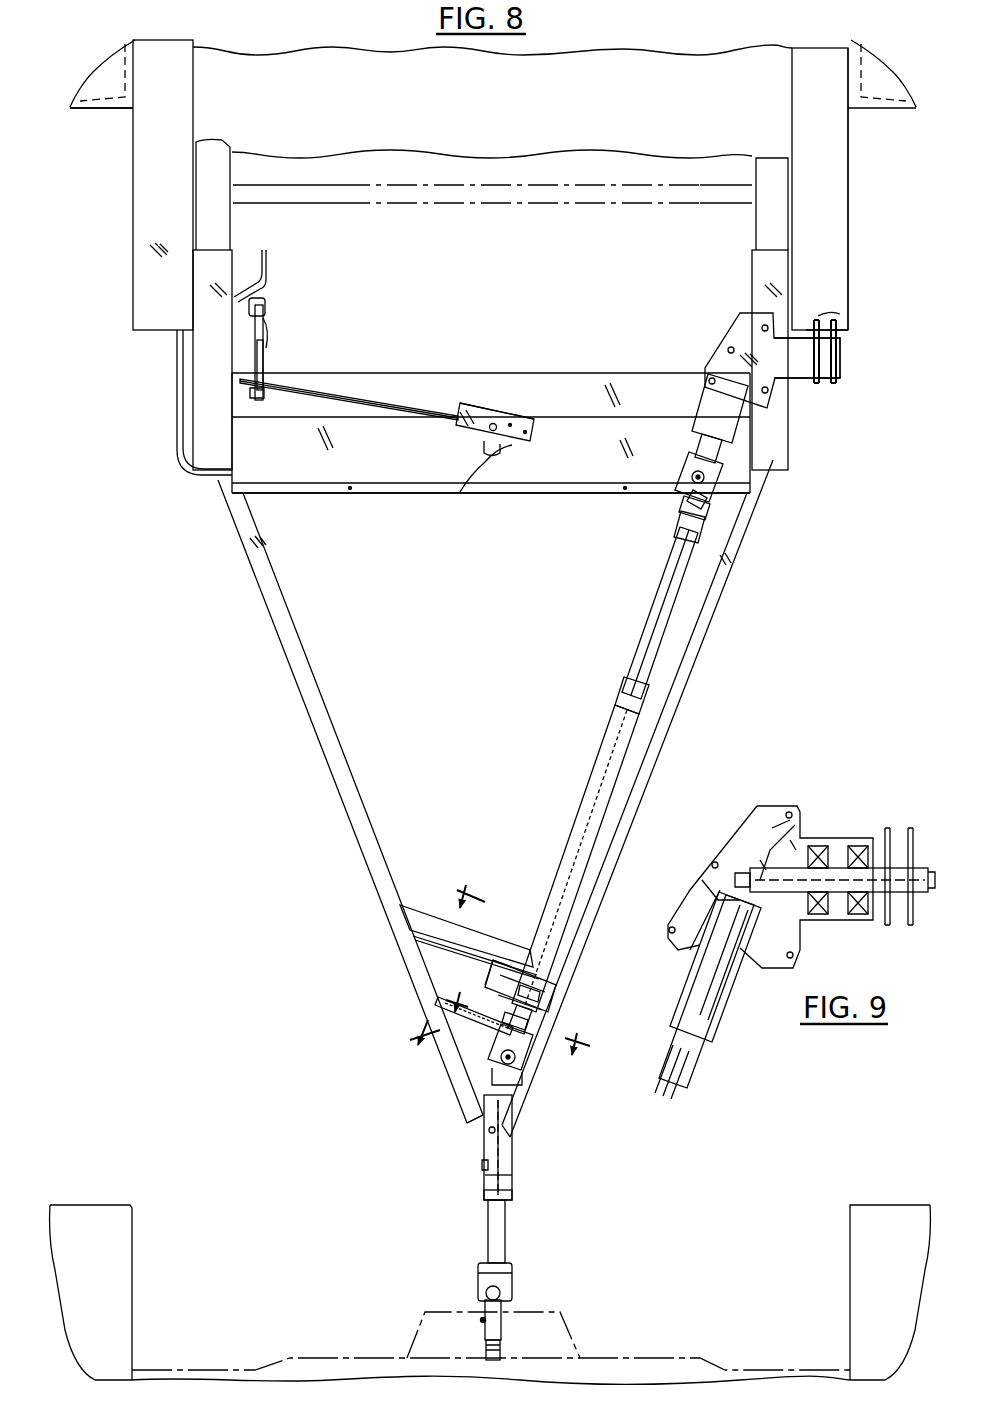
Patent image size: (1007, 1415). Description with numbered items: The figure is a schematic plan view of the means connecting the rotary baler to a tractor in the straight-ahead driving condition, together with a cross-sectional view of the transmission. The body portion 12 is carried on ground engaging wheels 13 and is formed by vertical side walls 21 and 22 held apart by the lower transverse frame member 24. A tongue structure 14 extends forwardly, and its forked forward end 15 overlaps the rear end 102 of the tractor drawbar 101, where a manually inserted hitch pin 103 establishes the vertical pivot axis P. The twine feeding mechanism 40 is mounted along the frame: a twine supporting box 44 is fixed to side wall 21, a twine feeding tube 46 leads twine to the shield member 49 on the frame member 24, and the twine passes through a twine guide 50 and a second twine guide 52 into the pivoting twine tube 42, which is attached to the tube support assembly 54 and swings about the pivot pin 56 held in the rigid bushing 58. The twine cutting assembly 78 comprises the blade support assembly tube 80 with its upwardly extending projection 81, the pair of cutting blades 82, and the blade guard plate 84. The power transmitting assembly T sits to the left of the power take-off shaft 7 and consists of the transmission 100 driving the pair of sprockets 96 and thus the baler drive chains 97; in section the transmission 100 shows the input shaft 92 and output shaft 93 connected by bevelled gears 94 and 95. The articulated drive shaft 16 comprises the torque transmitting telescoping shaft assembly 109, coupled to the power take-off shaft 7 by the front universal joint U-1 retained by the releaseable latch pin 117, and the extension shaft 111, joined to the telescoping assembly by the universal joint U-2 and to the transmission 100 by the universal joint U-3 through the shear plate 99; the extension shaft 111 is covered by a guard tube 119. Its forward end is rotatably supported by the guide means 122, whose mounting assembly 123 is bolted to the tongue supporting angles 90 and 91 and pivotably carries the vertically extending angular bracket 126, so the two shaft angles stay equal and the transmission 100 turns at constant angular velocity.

In FIG. 8, the power take-off shaft 7 is at (502, 1341).
In FIG. 8, the body portion 12 is at (852, 182).
In FIG. 8, the ground engaging wheels 13 is at (104, 104).
In FIG. 8, the tongue structure 14 is at (346, 832).
In FIG. 8, the forked forward end 15 is at (452, 1148).
In FIG. 8, the articulated drive shaft 16 is at (514, 1178).
In FIG. 8, the side wall 21 is at (133, 186).
In FIG. 8, the side wall 22 is at (849, 238).
In FIG. 8, the lower transverse frame member 24 is at (392, 384).
In FIG. 8, the twine feeding mechanism 40 is at (420, 432).
In FIG. 8, the pivoting twine tube 42 is at (332, 392).
In FIG. 8, the twine supporting box 44 is at (118, 115).
In FIG. 8, the twine feeding tube 46 is at (177, 378).
In FIG. 8, the shield member 49 is at (357, 500).
In FIG. 8, the twine guide 50 is at (462, 491).
In FIG. 8, the second twine guide 52 is at (513, 446).
In FIG. 8, the tube support assembly 54 is at (528, 412).
In FIG. 8, the pivot pin 56 is at (491, 420).
In FIG. 8, the rigid bushing 58 is at (484, 452).
In FIG. 8, the twine cutting assembly 78 is at (253, 362).
In FIG. 8, the blade support assembly tube 80 is at (264, 364).
In FIG. 8, the upwardly extending projection 81 is at (248, 398).
In FIG. 8, the cutting blades 82 is at (263, 312).
In FIG. 8, the blade guard plate 84 is at (267, 340).
In FIG. 8, the tongue supporting angle 90 is at (420, 918).
In FIG. 8, the tongue supporting angle 91 is at (436, 999).
In FIG. 9, the input shaft 92 is at (680, 1062).
In FIG. 9, the output shaft 93 is at (932, 892).
In FIG. 9, the bevelled gear 94 is at (698, 884).
In FIG. 9, the bevelled gear 95 is at (765, 833).
In FIG. 8, the sprockets 96 is at (833, 384).
In FIG. 9, the sprockets 96 is at (910, 830).
In FIG. 8, the baler drive chains 97 is at (838, 322).
In FIG. 8, the shear plate 99 is at (676, 505).
In FIG. 8, the transmission 100 is at (712, 352).
In FIG. 9, the transmission 100 is at (780, 806).
In FIG. 8, the drawbar 101 is at (506, 1230).
In FIG. 8, the rear end of drawbar 102 is at (482, 1177).
In FIG. 8, the hitch pin 103 is at (482, 1163).
In FIG. 8, the torque transmitting telescoping shaft assembly 109 is at (514, 1200).
In FIG. 8, the extension shaft 111 is at (622, 691).
In FIG. 8, the releaseable latch pin 117 is at (480, 1320).
In FIG. 8, the guard tube 119 is at (594, 785).
In FIG. 8, the guide means 122 is at (556, 998).
In FIG. 8, the mounting assembly 123 is at (493, 975).
In FIG. 8, the vertically extending angular bracket 126 is at (546, 990).
In FIG. 8, the power transmitting assembly T is at (850, 371).
In FIG. 8, the vertical pivot axis P is at (507, 1162).
In FIG. 8, the front universal joint U-1 is at (512, 1290).
In FIG. 8, the universal joint U-2 is at (524, 1070).
In FIG. 8, the universal joint U-3 is at (684, 478).